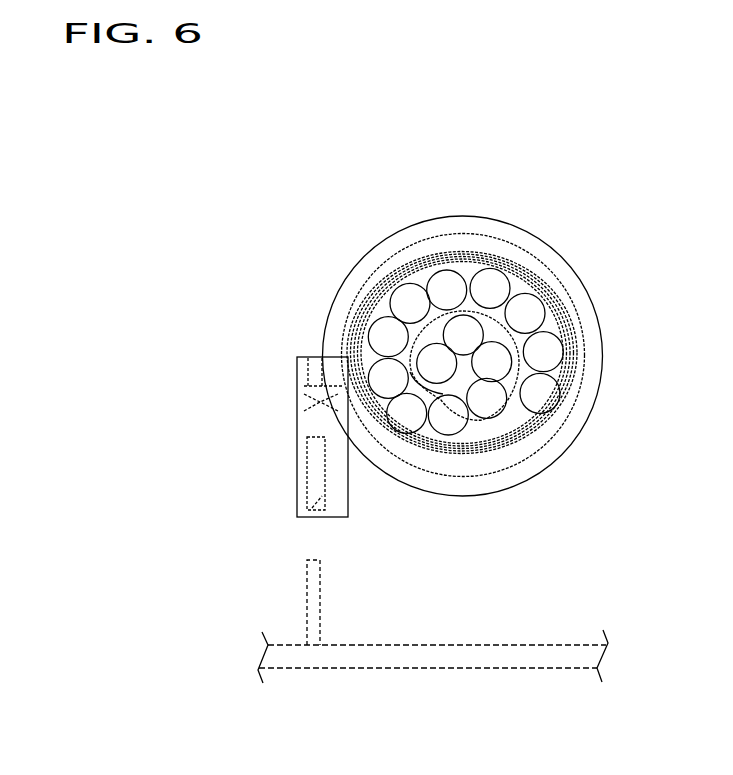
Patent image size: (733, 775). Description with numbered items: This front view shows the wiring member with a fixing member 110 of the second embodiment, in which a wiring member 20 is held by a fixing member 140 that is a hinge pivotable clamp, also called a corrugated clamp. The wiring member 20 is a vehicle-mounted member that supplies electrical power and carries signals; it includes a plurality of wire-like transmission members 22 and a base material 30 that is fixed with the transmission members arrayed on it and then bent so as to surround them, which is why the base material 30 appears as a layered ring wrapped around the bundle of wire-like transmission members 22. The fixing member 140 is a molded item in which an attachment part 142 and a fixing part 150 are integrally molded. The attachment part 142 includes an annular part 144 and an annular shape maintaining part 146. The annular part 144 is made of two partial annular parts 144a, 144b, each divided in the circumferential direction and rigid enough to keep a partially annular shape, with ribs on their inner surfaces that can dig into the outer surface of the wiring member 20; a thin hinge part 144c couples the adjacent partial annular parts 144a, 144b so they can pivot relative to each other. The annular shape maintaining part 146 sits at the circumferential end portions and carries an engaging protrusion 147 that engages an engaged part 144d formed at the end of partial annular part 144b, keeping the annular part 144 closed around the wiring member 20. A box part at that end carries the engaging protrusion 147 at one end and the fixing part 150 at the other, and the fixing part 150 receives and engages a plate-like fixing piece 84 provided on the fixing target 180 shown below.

The wiring member with a fixing member 110 is at (308, 163).
The fixing member 140 is at (527, 498).
The attachment part 142 is at (250, 257).
The annular part 144 is at (338, 290).
The partial annular part 144a is at (578, 432).
The partial annular part 144b is at (565, 268).
The hinge part 144c is at (578, 357).
The engaged part 144d is at (298, 422).
The annular shape maintaining part 146 is at (310, 357).
The engaging protrusion 147 is at (318, 390).
The fixing part 150 is at (313, 518).
The base material 30 is at (488, 452).
The wiring member 20 is at (462, 464).
The wire-like transmission members 22 is at (489, 268).
The plate-like fixing piece 84 is at (322, 607).
The fixing target 180 is at (435, 670).